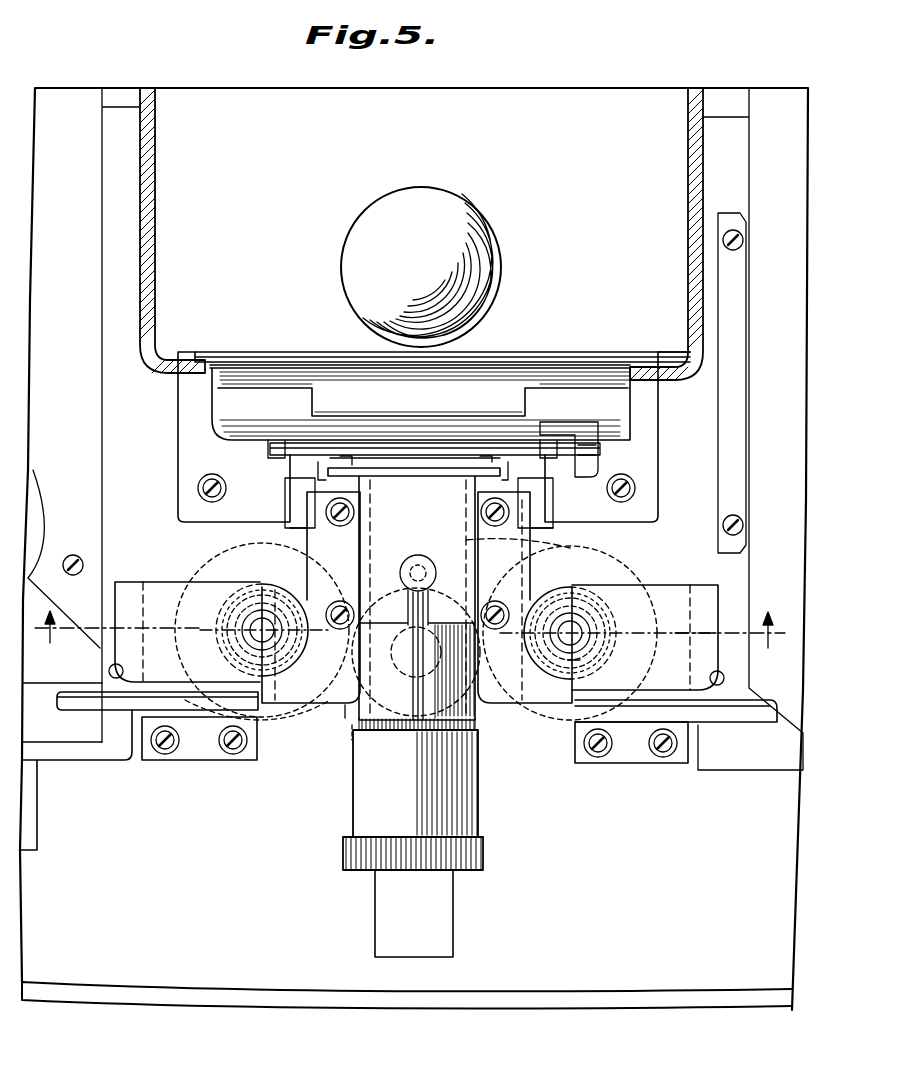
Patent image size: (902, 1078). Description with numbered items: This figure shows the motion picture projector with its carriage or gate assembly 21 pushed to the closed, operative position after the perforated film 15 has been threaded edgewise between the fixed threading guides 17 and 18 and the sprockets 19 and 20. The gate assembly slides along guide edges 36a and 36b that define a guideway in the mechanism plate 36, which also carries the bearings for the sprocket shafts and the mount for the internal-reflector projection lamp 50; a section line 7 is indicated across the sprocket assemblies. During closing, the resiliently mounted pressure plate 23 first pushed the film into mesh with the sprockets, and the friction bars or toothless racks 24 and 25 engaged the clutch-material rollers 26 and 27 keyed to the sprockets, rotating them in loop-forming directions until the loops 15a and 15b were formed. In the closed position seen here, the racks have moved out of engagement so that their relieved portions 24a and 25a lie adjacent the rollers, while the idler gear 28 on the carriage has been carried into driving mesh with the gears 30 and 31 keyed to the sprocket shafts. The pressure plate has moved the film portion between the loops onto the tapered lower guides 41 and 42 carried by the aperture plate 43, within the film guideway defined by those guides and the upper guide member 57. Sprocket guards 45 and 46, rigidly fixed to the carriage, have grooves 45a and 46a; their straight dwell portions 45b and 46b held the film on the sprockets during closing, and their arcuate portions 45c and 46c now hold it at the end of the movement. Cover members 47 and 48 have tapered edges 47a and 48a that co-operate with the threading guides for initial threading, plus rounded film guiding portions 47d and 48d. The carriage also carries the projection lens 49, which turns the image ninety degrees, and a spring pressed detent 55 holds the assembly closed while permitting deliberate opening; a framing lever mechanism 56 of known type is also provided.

The section line 7 is at (410, 642).
The perforated film 15 is at (47, 684).
The film loop 15a is at (265, 470).
The film loop 15b is at (580, 482).
The fixed threading guide 17 is at (78, 712).
The fixed threading guide 18 is at (725, 726).
The sprocket 19 is at (266, 600).
The sprocket 20 is at (610, 633).
The carriage or gate assembly 21 is at (344, 778).
The pressure plate 23 is at (358, 476).
The friction bar or toothless rack 24 is at (296, 492).
The relieved portion 24a is at (285, 595).
The friction bar or toothless rack 25 is at (542, 522).
The relieved portion 25a is at (552, 620).
The friction facing or roller 26 is at (268, 722).
The friction facing or roller 27 is at (560, 655).
The idler gear 28 is at (348, 748).
The gear 30 is at (218, 545).
The gear 31 is at (648, 565).
The mechanism plate 36 is at (627, 968).
The guide edge 36a is at (358, 722).
The guide edge 36b is at (470, 716).
The tapered lower guide 41 is at (348, 460).
The tapered lower guide 42 is at (488, 452).
The aperture plate 43 is at (398, 450).
The sprocket guard 45 is at (345, 705).
The groove 45a is at (362, 665).
The straight dwell portion 45b is at (300, 515).
The arcuate portion 45c is at (292, 670).
The sprocket guard 46 is at (556, 705).
The groove 46a is at (480, 545).
The straight dwell portion 46b is at (538, 500).
The arcuate portion 46c is at (448, 670).
The cover member 47 is at (130, 595).
The tapered edge 47a is at (170, 690).
The rounded film guiding portion 47d is at (107, 662).
The cover member 48 is at (710, 597).
The tapered edge 48a is at (645, 690).
The rounded film guiding portion 48d is at (728, 680).
The projection lens 49 is at (468, 822).
The projection lamp 50 is at (485, 244).
The spring pressed detent 55 is at (578, 660).
The framing lever mechanism 56 is at (583, 440).
The upper guide member 57 is at (432, 455).